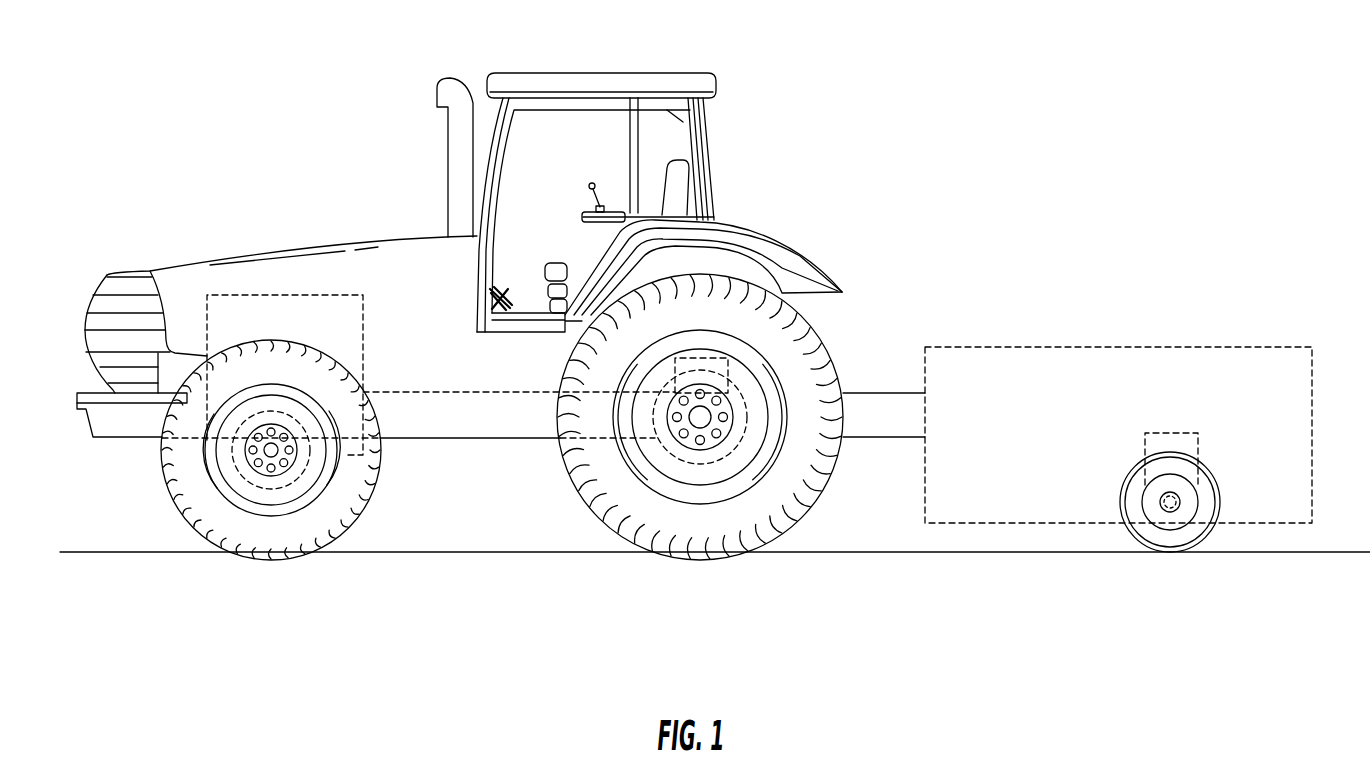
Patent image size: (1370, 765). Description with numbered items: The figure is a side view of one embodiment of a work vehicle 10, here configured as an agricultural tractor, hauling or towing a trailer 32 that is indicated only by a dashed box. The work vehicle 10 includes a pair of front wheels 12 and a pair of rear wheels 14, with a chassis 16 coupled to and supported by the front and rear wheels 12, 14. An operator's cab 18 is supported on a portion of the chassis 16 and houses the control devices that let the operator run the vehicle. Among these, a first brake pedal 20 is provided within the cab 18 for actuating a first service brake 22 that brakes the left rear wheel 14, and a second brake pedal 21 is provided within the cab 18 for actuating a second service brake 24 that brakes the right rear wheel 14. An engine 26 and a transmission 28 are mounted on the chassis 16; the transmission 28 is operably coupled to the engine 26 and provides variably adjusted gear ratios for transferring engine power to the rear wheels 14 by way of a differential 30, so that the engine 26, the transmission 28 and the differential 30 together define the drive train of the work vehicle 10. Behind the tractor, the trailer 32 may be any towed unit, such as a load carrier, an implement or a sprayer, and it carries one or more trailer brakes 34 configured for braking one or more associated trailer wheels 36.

The work vehicle 10 is at (205, 130).
The front wheels 12 is at (199, 532).
The rear wheels 14 is at (826, 486).
The chassis 16 is at (484, 438).
The operator's cab 18 is at (703, 133).
The first brake pedal 20 is at (494, 290).
The second brake pedal 21 is at (500, 297).
The first service brake 22 is at (777, 284).
The second service brake 24 is at (707, 357).
The engine 26 is at (265, 294).
The transmission 28 is at (463, 391).
The differential 30 is at (768, 410).
The trailer 32 is at (1122, 340).
The trailer brakes 34 is at (1177, 433).
The trailer wheels 36 is at (1192, 526).